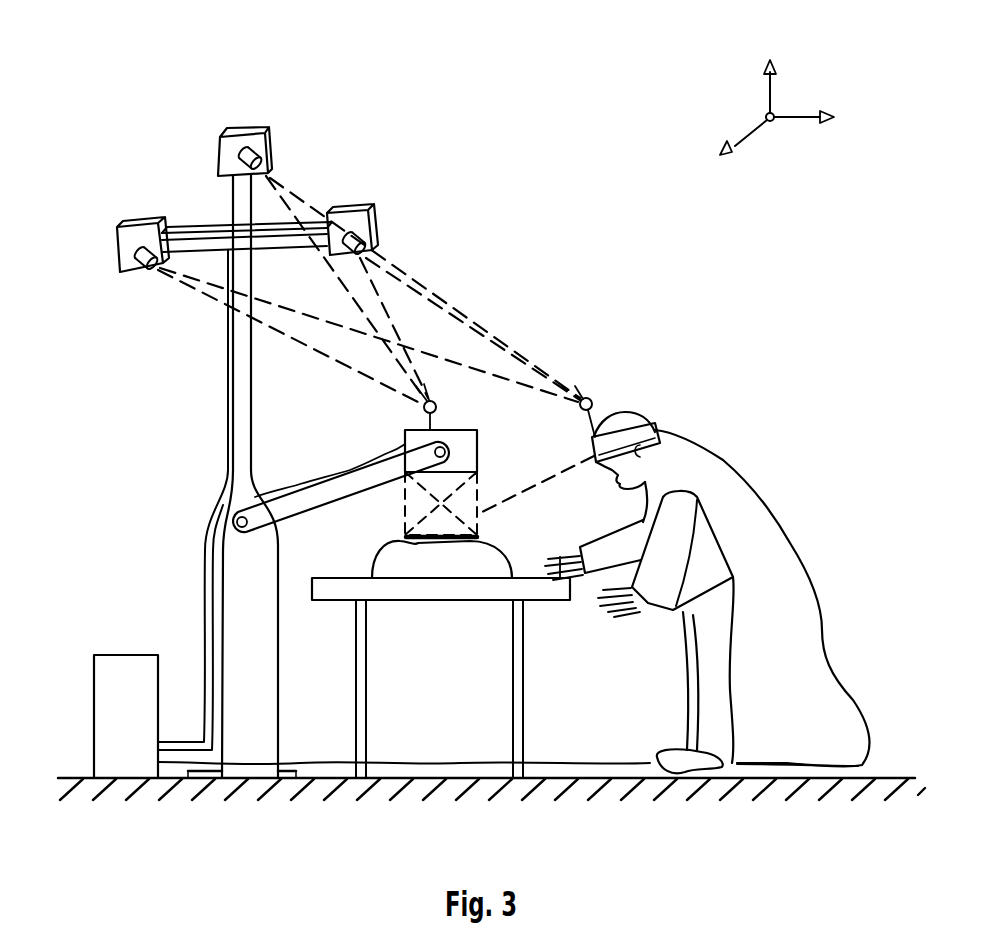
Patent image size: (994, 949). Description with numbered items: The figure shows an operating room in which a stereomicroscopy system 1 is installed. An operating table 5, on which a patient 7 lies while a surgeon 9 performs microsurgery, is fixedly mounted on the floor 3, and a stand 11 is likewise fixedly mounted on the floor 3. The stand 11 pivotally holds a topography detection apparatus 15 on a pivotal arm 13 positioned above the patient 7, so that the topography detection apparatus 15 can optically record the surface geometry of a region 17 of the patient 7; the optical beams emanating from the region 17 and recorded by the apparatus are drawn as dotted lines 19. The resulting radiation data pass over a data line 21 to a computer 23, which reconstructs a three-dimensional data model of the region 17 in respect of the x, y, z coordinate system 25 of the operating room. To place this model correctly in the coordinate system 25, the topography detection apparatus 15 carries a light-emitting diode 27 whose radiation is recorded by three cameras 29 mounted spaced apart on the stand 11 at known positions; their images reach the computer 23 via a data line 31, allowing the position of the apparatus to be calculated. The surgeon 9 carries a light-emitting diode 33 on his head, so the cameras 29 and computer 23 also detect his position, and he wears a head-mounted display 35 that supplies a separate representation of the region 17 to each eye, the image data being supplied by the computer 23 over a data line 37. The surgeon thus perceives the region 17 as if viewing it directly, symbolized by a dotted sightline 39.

The stereomicroscopy system 1 is at (496, 152).
The floor 3 is at (897, 771).
The operating table 5 is at (334, 602).
The patient 7 is at (376, 567).
The surgeon 9 is at (768, 443).
The stand 11 is at (222, 499).
The pivotal arm 13 is at (332, 481).
The topography detection apparatus 15 is at (478, 448).
The region of the patient 17 is at (402, 540).
The optical beams 19 is at (477, 481).
The data line 21 is at (217, 571).
The computer 23 is at (122, 655).
The coordinate system 25 is at (828, 70).
The light-emitting diode 27 is at (437, 408).
The cameras 29 is at (220, 143).
The data line 31 is at (232, 428).
The light-emitting diode 33 is at (593, 402).
The head-mounted display 35 is at (588, 444).
The data line 37 is at (415, 761).
The dotted sightline 39 is at (555, 477).